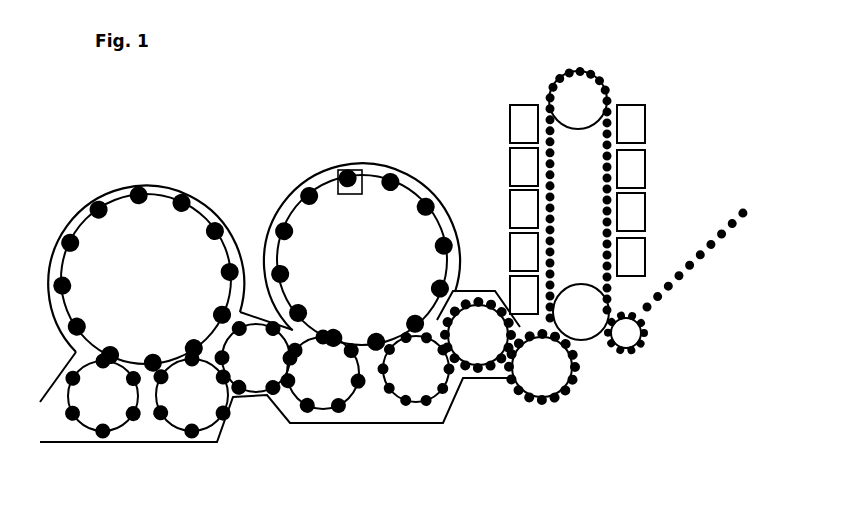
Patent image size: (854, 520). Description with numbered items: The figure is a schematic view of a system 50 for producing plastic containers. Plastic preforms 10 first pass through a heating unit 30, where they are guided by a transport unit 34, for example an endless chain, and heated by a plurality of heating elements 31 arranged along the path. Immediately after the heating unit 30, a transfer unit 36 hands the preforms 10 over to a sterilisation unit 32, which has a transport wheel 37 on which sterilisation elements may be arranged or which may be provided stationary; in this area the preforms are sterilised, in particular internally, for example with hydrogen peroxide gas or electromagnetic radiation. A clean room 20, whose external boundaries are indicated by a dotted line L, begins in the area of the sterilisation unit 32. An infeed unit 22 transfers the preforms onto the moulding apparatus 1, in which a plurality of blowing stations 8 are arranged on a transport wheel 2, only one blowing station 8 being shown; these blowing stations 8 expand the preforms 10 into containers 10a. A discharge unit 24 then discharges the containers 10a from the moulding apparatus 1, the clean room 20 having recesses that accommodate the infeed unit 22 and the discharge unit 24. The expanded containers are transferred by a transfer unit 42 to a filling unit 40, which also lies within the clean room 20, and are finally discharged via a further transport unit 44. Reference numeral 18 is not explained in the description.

The moulding apparatus 1 is at (344, 143).
The transport wheel 2 is at (407, 240).
The blowing station 8 is at (365, 172).
The plastic preform 10 is at (653, 310).
The container 10a is at (350, 415).
The beads on drum 18 is at (410, 178).
The clean room 20 is at (349, 218).
The infeed unit 22 is at (433, 380).
The discharge unit 24 is at (313, 400).
The heating unit 30 is at (546, 171).
The heating element 31 is at (522, 125).
The sterilisation unit 32 is at (474, 268).
The transport unit 34 is at (583, 92).
The transfer unit 36 is at (530, 377).
The transport wheel 37 is at (477, 353).
The filling unit 40 is at (118, 220).
The transfer unit 42 is at (215, 393).
The transport unit 44 is at (85, 400).
The system 50 is at (283, 75).
The dotted line L is at (370, 422).